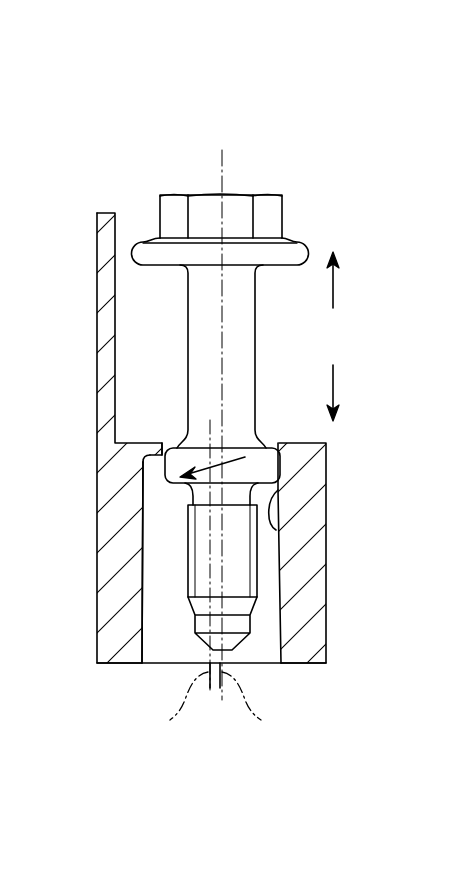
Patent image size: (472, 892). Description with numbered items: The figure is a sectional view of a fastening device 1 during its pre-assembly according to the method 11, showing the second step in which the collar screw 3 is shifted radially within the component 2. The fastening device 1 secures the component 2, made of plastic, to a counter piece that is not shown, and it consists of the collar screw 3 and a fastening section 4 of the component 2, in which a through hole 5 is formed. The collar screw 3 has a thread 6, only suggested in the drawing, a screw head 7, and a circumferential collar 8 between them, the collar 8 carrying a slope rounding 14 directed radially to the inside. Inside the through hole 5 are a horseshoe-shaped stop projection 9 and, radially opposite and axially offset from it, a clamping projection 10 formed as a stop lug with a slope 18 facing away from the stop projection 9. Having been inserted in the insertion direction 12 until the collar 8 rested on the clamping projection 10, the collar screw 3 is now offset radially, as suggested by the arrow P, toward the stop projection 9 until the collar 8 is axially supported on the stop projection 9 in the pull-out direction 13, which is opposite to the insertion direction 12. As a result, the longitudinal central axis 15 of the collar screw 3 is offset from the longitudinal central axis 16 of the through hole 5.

The fastening device 1 is at (345, 204).
The method 11 is at (236, 438).
The component 2 is at (326, 549).
The collar screw 3 is at (255, 348).
The fastening section 4 is at (321, 614).
The through hole 5 is at (168, 598).
The thread 6 is at (257, 573).
The screw head 7 is at (270, 206).
The collar 8 is at (280, 466).
The stop projection 9 is at (143, 450).
The clamping projection 10 is at (279, 497).
The insertion direction 12 is at (333, 383).
The pull-out direction 13 is at (333, 288).
The slope rounding 14 is at (162, 445).
The longitudinal central axis of the collar screw 15 is at (254, 704).
The longitudinal central axis of the through hole 16 is at (177, 704).
The slope 18 is at (279, 530).
The arrow P is at (232, 447).